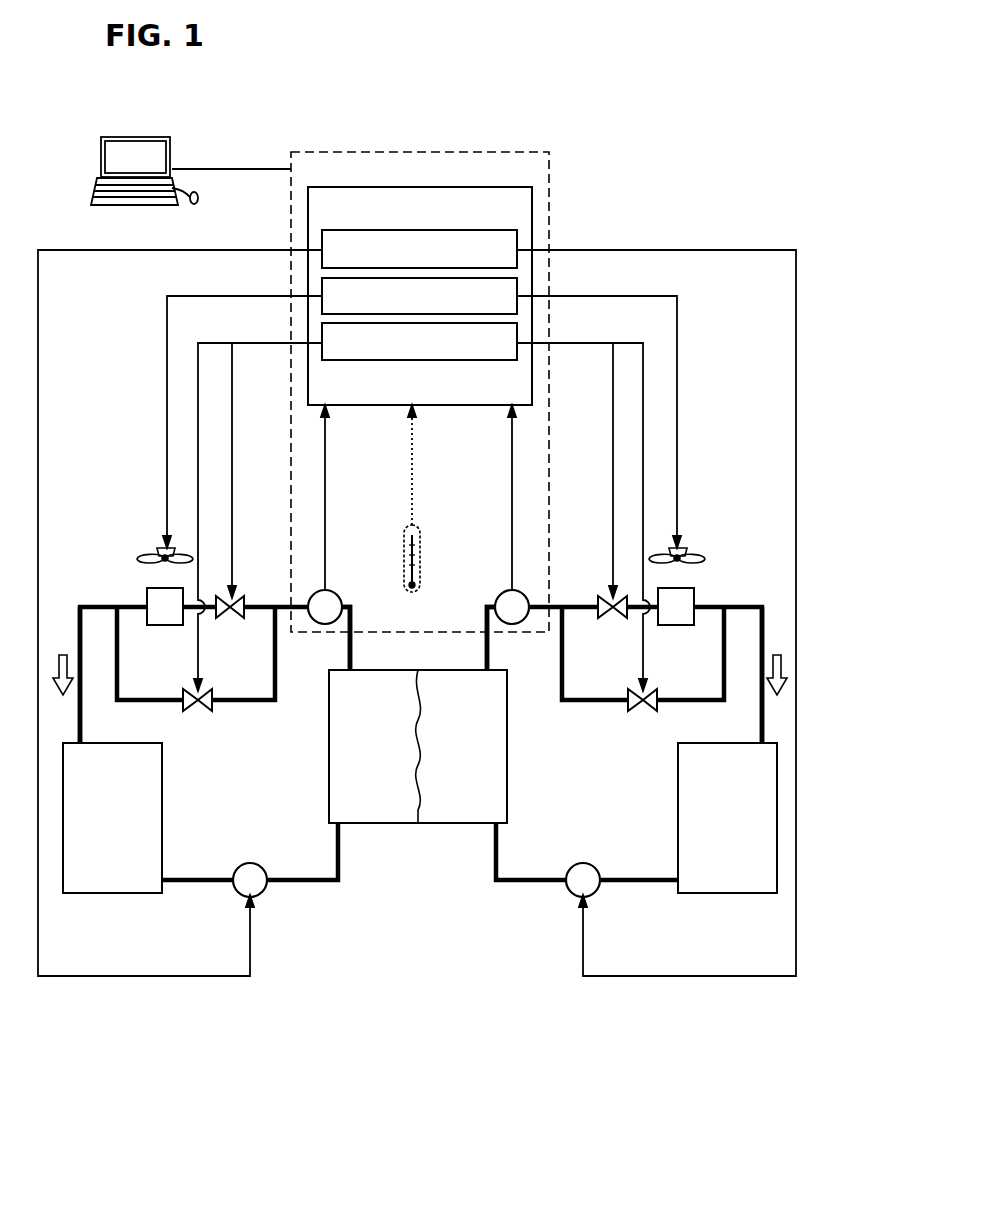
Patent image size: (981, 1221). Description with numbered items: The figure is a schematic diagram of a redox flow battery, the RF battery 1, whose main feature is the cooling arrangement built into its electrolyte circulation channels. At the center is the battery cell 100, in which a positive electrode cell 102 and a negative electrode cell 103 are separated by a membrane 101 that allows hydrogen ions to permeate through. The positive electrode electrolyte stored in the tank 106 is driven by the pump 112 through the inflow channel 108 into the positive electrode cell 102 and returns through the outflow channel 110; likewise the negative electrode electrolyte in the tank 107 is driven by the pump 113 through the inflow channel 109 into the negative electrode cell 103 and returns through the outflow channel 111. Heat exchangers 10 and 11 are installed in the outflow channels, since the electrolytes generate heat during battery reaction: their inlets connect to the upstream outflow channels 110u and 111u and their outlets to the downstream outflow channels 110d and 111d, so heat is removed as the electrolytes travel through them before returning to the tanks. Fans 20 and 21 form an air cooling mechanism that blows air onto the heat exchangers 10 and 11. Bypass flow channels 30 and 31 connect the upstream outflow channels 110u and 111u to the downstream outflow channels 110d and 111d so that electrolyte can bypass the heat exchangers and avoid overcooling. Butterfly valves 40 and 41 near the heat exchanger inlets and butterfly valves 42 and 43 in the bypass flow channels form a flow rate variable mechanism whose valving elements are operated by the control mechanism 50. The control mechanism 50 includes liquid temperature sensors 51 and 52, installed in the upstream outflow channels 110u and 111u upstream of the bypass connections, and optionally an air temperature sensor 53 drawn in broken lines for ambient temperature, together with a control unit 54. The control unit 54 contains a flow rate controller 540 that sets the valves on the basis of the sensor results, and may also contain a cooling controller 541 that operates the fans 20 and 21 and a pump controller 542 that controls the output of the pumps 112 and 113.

The RF battery 1 is at (704, 184).
The control mechanism 50 is at (549, 168).
The control unit 54 is at (532, 200).
The pump controller 542 is at (532, 258).
The cooling controller 541 is at (532, 306).
The flow rate controller 540 is at (483, 360).
The air temperature sensor 53 is at (418, 525).
The liquid temperature sensor 51 is at (338, 595).
The liquid temperature sensor 52 is at (499, 595).
The fan 20 is at (151, 548).
The fan 21 is at (689, 548).
The heat exchanger 10 is at (163, 626).
The heat exchanger 11 is at (680, 626).
The butterfly valve 40 is at (230, 619).
The butterfly valve 41 is at (613, 619).
The butterfly valve 42 is at (197, 713).
The butterfly valve 43 is at (641, 713).
The bypass flow channel 30 is at (253, 703).
The bypass flow channel 31 is at (595, 703).
The outflow channel 110 is at (451, 811).
The upstream outflow channel 110u is at (348, 648).
The downstream outflow channel 110d is at (79, 620).
The outflow channel 111 is at (654, 825).
The upstream outflow channel 111u is at (490, 648).
The downstream outflow channel 111d is at (763, 620).
The battery cell 100 is at (418, 802).
The membrane 101 is at (418, 824).
The positive electrode cell 102 is at (378, 825).
The negative electrode cell 103 is at (462, 778).
The positive electrode electrolyte tank 106 is at (108, 894).
The negative electrode electrolyte tank 107 is at (730, 894).
The inflow channel 108 is at (318, 888).
The inflow channel 109 is at (518, 888).
The pump 112 is at (249, 861).
The pump 113 is at (585, 861).